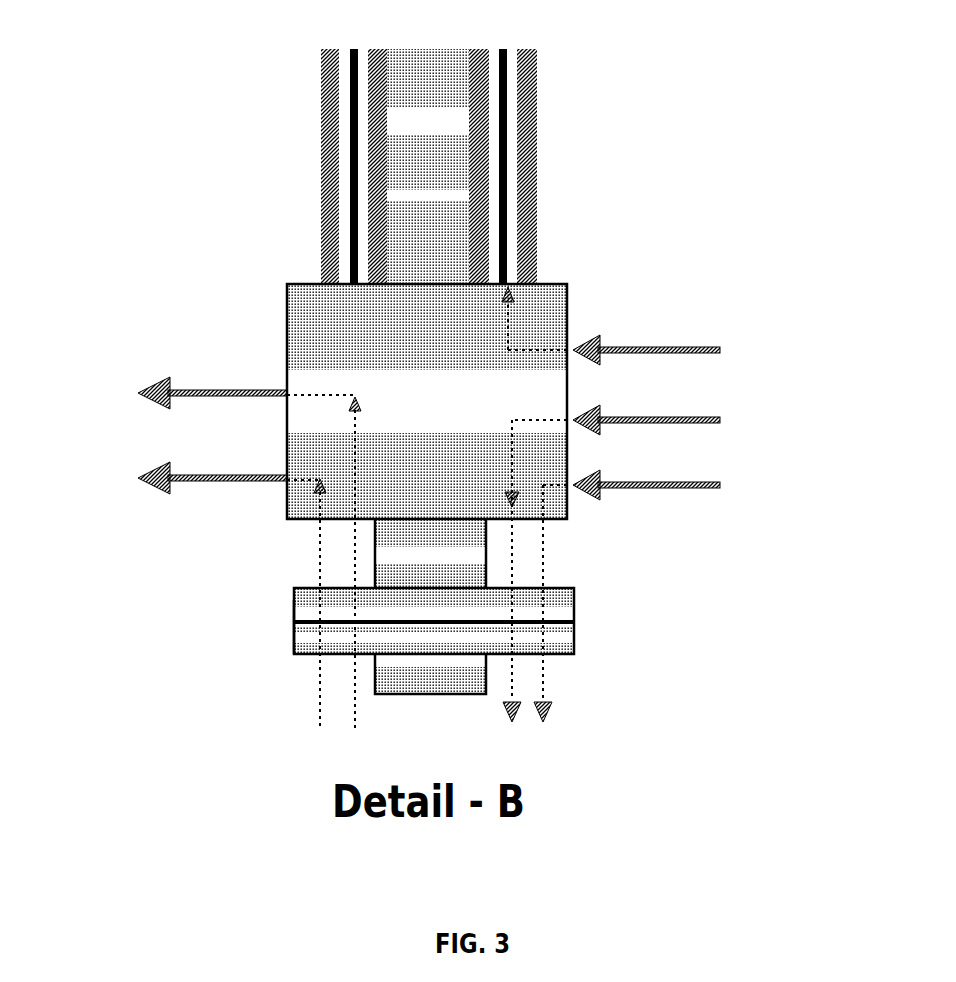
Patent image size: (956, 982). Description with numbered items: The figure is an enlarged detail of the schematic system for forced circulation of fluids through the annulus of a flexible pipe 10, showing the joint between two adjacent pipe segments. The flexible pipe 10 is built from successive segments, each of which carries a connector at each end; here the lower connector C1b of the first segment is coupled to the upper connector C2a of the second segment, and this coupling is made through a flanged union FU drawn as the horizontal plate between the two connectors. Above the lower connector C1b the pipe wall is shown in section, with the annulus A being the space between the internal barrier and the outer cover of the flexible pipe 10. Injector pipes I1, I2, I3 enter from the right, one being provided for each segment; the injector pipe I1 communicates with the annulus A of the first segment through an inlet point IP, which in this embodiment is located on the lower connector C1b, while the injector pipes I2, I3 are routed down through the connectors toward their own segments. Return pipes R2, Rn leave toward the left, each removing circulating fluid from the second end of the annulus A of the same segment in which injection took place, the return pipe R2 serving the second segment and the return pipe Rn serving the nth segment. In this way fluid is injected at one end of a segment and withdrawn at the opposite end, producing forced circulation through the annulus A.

The flexible pipe 10 is at (257, 121).
The annulus A is at (514, 94).
The inlet point IP is at (580, 330).
The lower connector of the first segment C1b is at (407, 410).
The injector pipe I1 is at (687, 348).
The injector pipe I2 is at (652, 555).
The injector pipe I3 is at (668, 588).
The return pipe R2 is at (212, 547).
The return pipe Rn is at (197, 587).
The flanged union FU is at (588, 624).
The upper connector of the second segment C2a is at (288, 661).